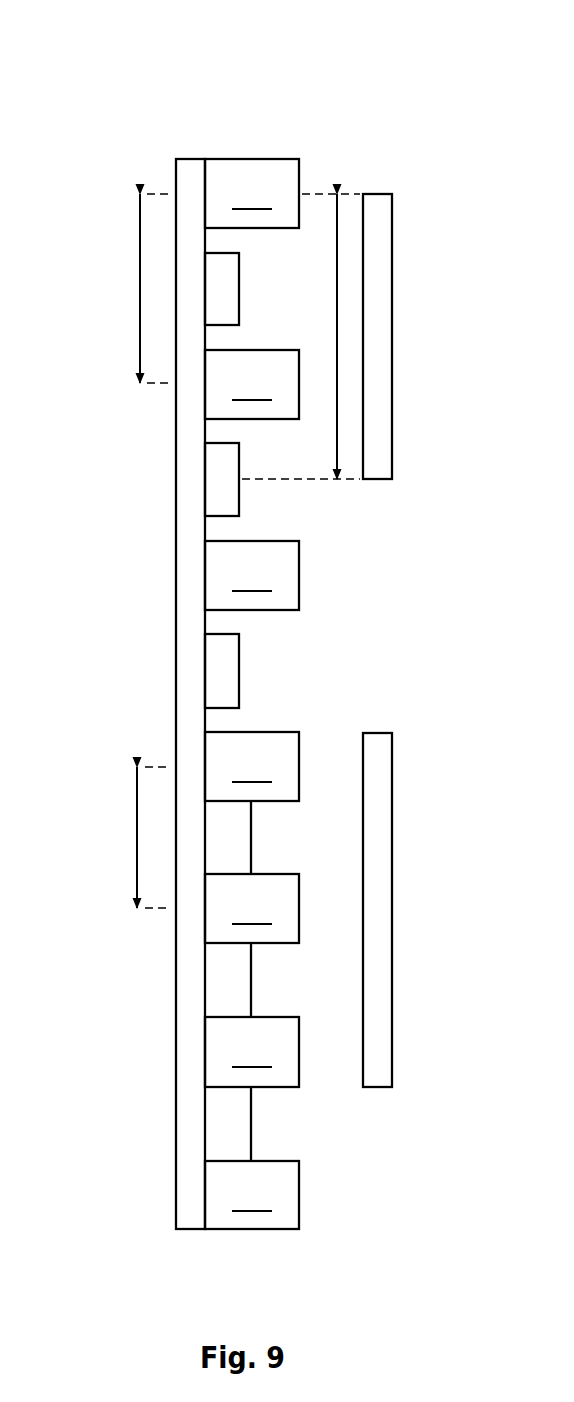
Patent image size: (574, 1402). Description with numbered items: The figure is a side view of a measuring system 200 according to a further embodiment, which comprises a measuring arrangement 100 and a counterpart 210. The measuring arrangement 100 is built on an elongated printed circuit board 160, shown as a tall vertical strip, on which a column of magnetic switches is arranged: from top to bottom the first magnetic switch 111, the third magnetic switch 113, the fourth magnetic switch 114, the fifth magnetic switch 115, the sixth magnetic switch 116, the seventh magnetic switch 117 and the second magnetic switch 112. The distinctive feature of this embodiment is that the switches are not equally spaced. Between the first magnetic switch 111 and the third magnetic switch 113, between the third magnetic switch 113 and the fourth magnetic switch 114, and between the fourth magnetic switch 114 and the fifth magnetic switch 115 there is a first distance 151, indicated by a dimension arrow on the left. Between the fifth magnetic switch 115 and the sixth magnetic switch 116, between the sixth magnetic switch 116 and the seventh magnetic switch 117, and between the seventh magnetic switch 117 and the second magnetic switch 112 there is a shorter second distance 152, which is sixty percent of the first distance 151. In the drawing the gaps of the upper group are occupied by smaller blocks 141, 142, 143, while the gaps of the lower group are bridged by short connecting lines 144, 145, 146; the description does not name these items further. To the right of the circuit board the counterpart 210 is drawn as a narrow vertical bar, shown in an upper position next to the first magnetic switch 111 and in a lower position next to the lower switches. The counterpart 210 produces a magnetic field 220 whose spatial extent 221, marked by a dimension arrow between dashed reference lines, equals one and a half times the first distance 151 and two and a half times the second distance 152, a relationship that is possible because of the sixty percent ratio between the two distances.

The measuring arrangement 100 is at (187, 1240).
The first magnetic switch 111 is at (252, 193).
The second magnetic switch 112 is at (252, 1195).
The third magnetic switch 113 is at (252, 384).
The fourth magnetic switch 114 is at (252, 575).
The fifth magnetic switch 115 is at (252, 766).
The sixth magnetic switch 116 is at (252, 908).
The seventh magnetic switch 117 is at (252, 1052).
The first connection portion 141 is at (228, 287).
The second connection portion 142 is at (215, 479).
The third connection portion 143 is at (215, 669).
The fourth connection portion 144 is at (243, 842).
The fifth connection portion 145 is at (216, 982).
The sixth connection portion 146 is at (216, 1123).
The first distance 151 is at (140, 290).
The second distance 152 is at (137, 832).
The printed circuit board 160 is at (188, 547).
The measuring system 200 is at (152, 58).
The counterpart 210 is at (384, 433).
The magnetic field 220 is at (345, 223).
The spatial extent 221 is at (338, 303).